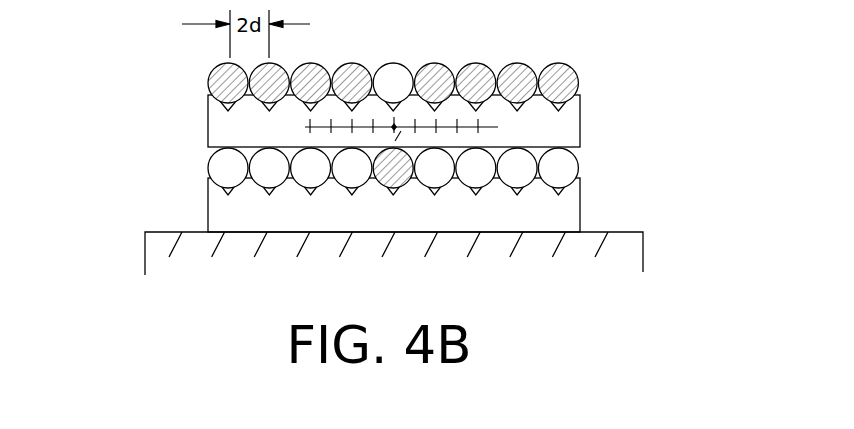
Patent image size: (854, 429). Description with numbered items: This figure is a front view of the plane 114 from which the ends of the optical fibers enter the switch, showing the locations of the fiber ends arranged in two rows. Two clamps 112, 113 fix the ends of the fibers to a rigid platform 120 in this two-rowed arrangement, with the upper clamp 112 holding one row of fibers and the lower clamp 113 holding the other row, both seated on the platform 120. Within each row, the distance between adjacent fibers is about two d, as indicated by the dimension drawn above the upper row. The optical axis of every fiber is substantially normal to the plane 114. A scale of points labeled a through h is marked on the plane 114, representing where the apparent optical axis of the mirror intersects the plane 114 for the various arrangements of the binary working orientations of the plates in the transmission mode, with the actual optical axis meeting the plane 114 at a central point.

The clamp 112 is at (580, 122).
The clamp 113 is at (580, 203).
The plane 114 is at (150, 144).
The rigid platform 120 is at (643, 247).